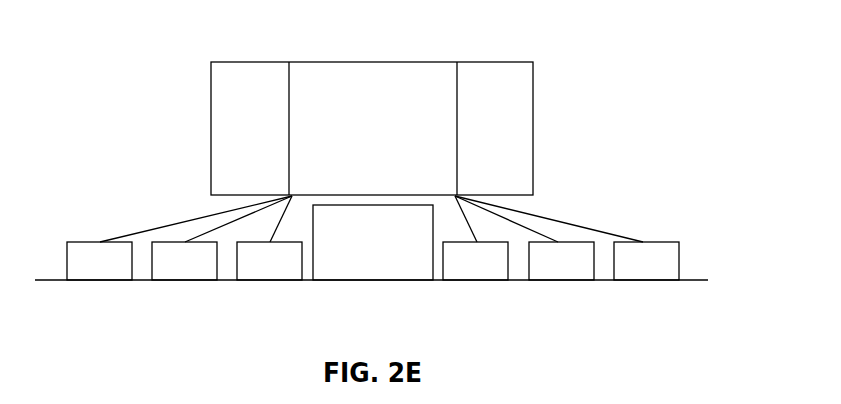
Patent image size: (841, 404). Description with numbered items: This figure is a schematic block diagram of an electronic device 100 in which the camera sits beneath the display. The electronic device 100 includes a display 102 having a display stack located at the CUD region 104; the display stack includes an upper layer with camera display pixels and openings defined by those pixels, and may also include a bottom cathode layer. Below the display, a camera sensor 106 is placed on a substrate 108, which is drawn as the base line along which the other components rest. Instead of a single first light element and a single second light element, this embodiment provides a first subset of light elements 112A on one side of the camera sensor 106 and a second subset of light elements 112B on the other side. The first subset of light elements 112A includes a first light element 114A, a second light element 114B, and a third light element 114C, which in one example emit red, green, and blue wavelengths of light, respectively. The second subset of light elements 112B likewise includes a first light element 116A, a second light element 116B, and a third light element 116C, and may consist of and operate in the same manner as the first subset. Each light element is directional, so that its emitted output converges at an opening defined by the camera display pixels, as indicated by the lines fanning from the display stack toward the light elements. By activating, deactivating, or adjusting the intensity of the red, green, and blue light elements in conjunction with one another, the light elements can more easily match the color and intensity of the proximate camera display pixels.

The electronic device 100 is at (170, 36).
The display 102 is at (517, 130).
The CUD region 104 is at (430, 72).
The camera sensor 106 is at (373, 267).
The substrate 108 is at (693, 282).
The first subset of light elements 112A is at (131, 199).
The second subset of light elements 112B is at (617, 198).
The first light element 114A is at (99, 275).
The second light element 114B is at (185, 275).
The third light element 114C is at (270, 275).
The first light element 116A is at (475, 275).
The second light element 116B is at (562, 275).
The third light element 116C is at (647, 275).